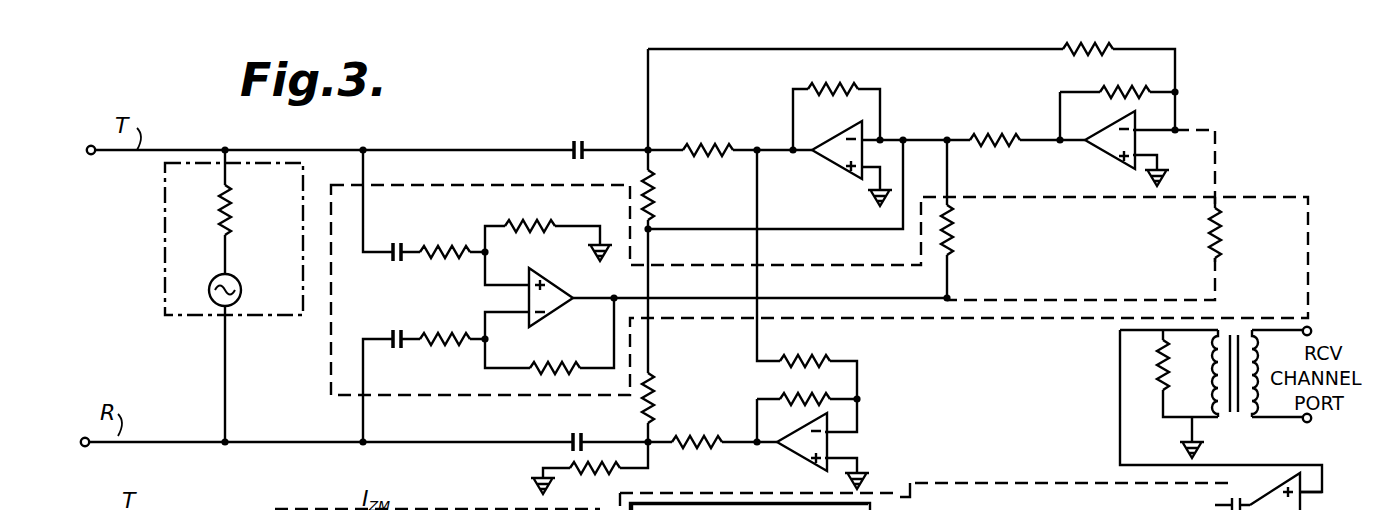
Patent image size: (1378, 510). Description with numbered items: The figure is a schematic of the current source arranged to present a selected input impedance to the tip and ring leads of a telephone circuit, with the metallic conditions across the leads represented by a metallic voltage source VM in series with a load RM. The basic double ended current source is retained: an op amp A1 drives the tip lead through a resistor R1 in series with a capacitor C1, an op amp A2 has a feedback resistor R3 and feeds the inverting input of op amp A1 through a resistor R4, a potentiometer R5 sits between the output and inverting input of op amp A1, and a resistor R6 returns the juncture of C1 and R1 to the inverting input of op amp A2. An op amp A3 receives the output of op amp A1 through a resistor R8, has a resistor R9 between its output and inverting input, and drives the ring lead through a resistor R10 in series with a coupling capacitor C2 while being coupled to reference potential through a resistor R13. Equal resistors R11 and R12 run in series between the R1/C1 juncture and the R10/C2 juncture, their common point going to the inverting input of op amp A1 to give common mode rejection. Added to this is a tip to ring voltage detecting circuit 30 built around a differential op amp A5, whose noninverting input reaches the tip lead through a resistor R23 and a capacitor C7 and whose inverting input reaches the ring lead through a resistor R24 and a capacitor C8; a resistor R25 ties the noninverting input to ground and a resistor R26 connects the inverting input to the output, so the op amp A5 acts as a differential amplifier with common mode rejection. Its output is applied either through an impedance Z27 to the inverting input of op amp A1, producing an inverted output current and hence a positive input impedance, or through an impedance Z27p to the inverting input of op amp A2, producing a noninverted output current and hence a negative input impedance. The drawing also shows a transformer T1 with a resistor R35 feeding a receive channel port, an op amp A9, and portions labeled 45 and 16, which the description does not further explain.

The tip to ring voltage detecting circuit 30 is at (323, 383).
The receive channel circuit 45 is at (912, 482).
The hybrid circuit 16 is at (904, 500).
The transformer T1 is at (1221, 409).
The operational amplifier A1 is at (834, 160).
The operational amplifier A2 is at (1106, 153).
The operational amplifier A3 is at (800, 456).
The differential op amp A5 is at (570, 262).
The operational amplifier A9 is at (1305, 505).
The resistor R1 is at (707, 138).
The resistor R3 is at (1125, 81).
The resistor R4 is at (995, 128).
The potentiometer R5 is at (833, 77).
The resistor R6 is at (1088, 38).
The resistor R8 is at (805, 348).
The resistor R9 is at (805, 387).
The resistor R10 is at (732, 425).
The resistor R11 is at (673, 195).
The resistor R12 is at (672, 398).
The resistor R13 is at (595, 483).
The resistor R23 is at (444, 241).
The resistor R24 is at (440, 327).
The resistor R25 is at (530, 213).
The resistor R26 is at (555, 358).
The resistor R35 is at (1147, 365).
The load RM is at (243, 210).
The metallic voltage source VM is at (242, 287).
The capacitor C1 is at (577, 140).
The coupling capacitor C2 is at (567, 431).
The capacitor C7 is at (386, 243).
The capacitor C8 is at (378, 328).
The impedance Z27 is at (973, 230).
The impedance Z27p is at (1244, 233).